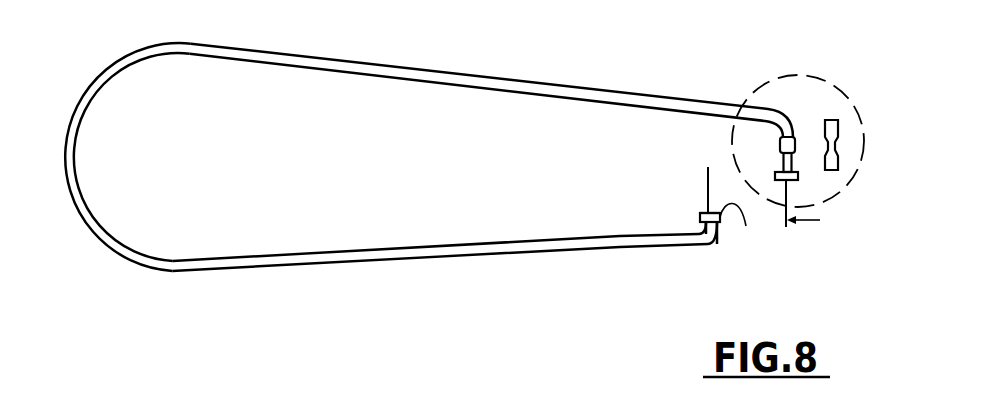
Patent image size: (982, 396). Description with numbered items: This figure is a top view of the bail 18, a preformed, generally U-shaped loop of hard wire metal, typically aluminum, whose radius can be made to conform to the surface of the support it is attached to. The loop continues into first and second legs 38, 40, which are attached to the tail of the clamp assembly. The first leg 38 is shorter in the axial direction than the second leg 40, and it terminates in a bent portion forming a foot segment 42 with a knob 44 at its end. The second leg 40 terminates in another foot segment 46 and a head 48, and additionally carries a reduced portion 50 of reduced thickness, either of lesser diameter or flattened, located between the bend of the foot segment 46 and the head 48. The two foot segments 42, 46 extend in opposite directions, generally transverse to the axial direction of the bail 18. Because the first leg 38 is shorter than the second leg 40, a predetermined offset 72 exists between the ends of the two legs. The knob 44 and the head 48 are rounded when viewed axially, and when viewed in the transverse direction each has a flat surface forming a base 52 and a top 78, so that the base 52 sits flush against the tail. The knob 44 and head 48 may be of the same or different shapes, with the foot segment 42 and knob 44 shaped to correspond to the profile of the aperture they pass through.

The bail 18 is at (208, 175).
The first leg 38 is at (415, 253).
The second leg 40 is at (372, 70).
The foot segment 42 is at (700, 244).
The knob 44 is at (701, 216).
The foot segment 46 is at (793, 160).
The head 48 is at (781, 180).
The reduced portion 50 is at (822, 150).
The base 52 is at (779, 168).
The offset 72 is at (707, 190).
The top 78 is at (740, 226).